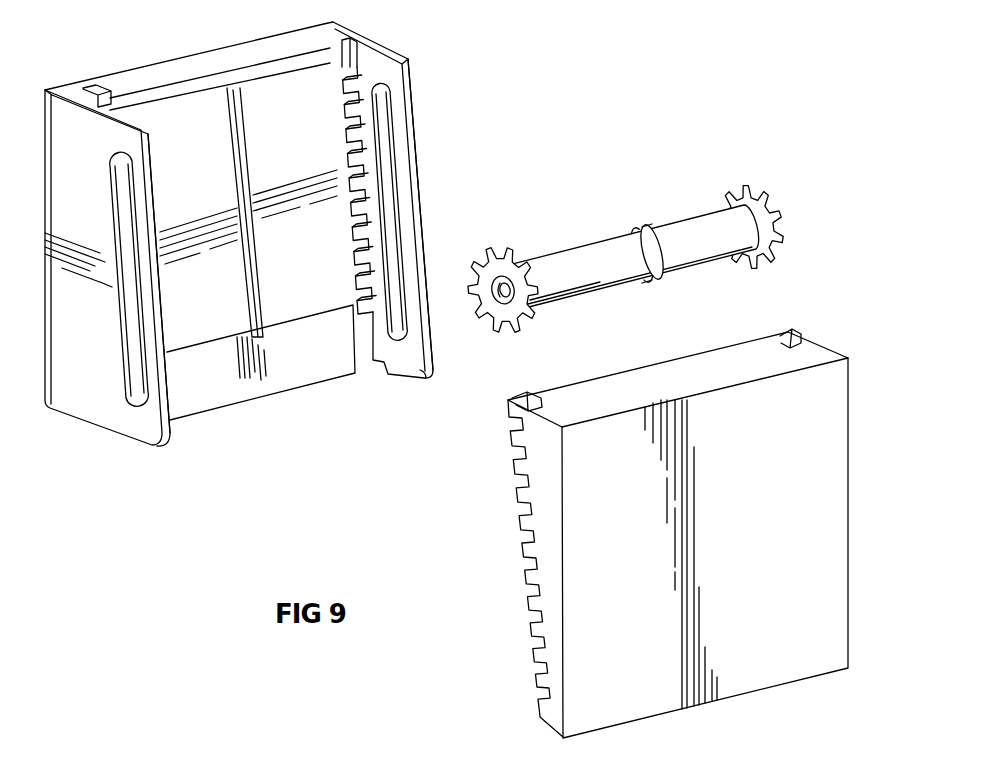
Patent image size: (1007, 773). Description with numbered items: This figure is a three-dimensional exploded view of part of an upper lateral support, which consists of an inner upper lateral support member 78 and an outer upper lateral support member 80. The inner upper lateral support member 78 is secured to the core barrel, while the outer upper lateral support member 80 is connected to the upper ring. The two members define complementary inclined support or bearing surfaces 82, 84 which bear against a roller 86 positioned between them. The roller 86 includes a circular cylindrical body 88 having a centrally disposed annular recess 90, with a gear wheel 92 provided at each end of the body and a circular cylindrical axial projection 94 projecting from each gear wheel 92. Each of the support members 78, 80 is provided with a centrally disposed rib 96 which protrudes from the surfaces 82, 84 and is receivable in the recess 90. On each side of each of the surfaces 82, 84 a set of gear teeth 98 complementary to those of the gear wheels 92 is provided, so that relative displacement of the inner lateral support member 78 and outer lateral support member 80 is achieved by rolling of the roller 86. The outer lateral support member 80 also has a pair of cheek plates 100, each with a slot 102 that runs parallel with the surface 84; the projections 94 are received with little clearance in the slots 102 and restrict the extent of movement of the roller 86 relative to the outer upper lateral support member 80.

The inner upper lateral support member 78 is at (855, 426).
The outer upper lateral support member 80 is at (110, 63).
The inclined support or bearing surface 82 is at (662, 360).
The inclined support or bearing surface 84 is at (253, 90).
The roller 86 is at (655, 208).
The circular cylindrical body 88 is at (691, 260).
The annular recess 90 is at (636, 228).
The gear wheel 92 is at (742, 203).
The circular cylindrical axial projection 94 is at (503, 293).
The rib 96 is at (244, 178).
The set of gear teeth 98 is at (372, 173).
The cheek plate 100 is at (150, 307).
The slot 102 is at (137, 231).